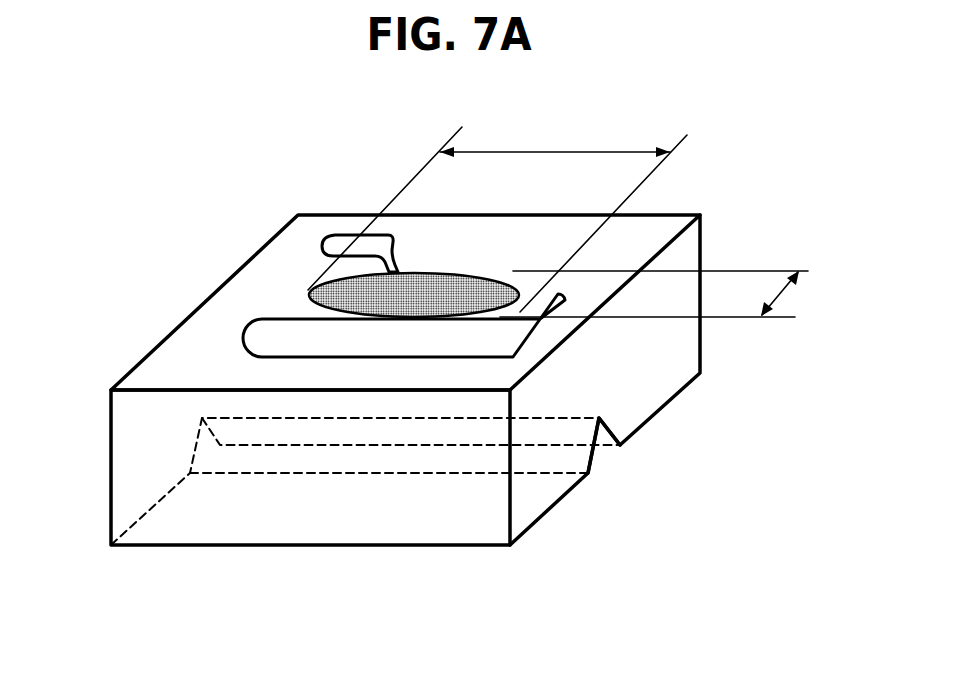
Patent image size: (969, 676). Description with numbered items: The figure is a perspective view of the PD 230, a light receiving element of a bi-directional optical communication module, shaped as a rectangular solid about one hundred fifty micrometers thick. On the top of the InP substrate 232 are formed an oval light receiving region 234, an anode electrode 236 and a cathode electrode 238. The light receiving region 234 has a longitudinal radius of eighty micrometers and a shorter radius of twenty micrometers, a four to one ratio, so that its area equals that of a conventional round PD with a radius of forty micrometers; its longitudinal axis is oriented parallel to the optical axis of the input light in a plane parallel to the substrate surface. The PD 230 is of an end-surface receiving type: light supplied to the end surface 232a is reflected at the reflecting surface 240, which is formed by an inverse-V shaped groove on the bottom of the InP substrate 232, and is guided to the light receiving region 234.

The PD 230 is at (178, 152).
The InP substrate 232 is at (148, 359).
The end surface 232a is at (195, 532).
The light receiving region 234 is at (308, 290).
The anode electrode 236 is at (343, 235).
The cathode electrode 238 is at (255, 338).
The reflecting surface 240 is at (593, 458).